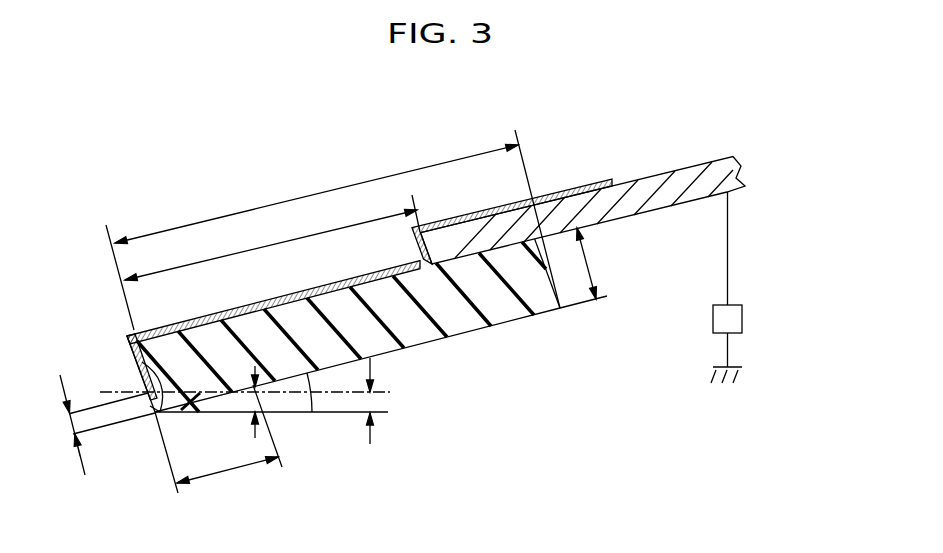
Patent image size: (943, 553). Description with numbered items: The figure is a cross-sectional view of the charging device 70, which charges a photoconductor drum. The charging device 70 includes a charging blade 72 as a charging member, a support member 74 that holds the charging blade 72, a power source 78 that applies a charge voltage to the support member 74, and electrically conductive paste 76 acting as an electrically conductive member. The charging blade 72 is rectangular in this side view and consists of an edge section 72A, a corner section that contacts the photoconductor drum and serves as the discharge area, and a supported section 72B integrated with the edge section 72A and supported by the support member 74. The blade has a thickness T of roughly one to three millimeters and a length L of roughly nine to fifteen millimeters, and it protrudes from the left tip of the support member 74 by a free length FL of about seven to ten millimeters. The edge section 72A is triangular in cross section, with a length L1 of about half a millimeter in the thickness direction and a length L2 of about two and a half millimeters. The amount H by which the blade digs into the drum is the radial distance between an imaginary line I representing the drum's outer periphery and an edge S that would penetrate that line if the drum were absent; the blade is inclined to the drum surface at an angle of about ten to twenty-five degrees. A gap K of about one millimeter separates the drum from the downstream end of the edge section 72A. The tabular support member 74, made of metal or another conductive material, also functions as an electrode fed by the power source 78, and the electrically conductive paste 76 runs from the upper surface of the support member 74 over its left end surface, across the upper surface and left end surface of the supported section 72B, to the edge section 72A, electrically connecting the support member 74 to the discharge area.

The charging device 70 is at (426, 208).
The charging blade 72 is at (337, 325).
The edge section 72A is at (140, 368).
The supported section 72B is at (468, 333).
The support member 74 is at (687, 180).
The electrically conductive paste 76 is at (573, 189).
The power source 78 is at (742, 318).
The length L is at (333, 230).
The free length FL is at (272, 238).
The length in thickness direction L1 is at (66, 430).
The length of edge section L2 is at (218, 444).
The gap K is at (251, 404).
The dig-in amount H is at (376, 400).
The thickness T is at (589, 263).
The imaginary line I is at (394, 391).
The edge S is at (155, 416).